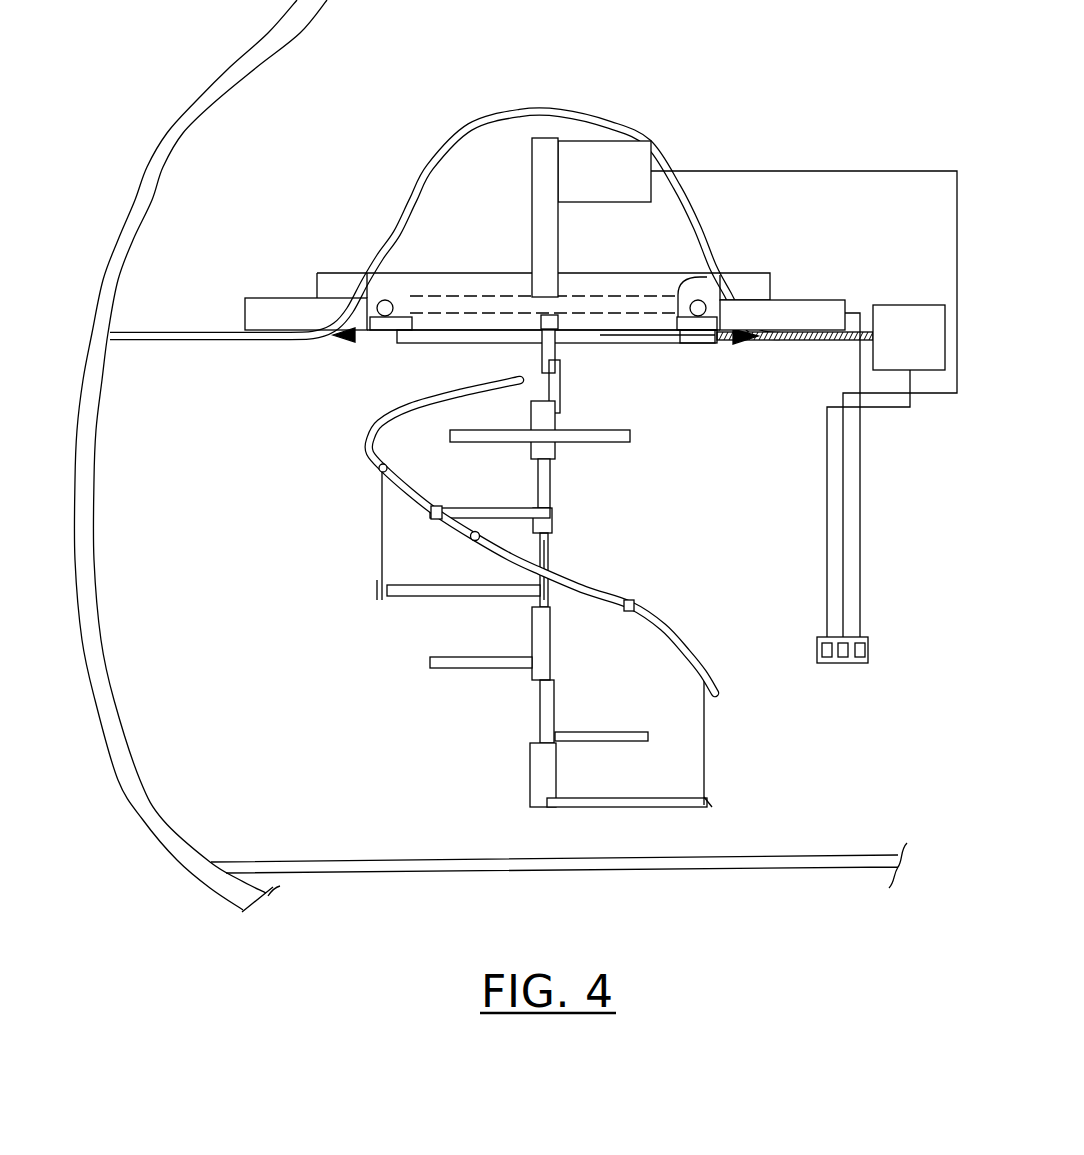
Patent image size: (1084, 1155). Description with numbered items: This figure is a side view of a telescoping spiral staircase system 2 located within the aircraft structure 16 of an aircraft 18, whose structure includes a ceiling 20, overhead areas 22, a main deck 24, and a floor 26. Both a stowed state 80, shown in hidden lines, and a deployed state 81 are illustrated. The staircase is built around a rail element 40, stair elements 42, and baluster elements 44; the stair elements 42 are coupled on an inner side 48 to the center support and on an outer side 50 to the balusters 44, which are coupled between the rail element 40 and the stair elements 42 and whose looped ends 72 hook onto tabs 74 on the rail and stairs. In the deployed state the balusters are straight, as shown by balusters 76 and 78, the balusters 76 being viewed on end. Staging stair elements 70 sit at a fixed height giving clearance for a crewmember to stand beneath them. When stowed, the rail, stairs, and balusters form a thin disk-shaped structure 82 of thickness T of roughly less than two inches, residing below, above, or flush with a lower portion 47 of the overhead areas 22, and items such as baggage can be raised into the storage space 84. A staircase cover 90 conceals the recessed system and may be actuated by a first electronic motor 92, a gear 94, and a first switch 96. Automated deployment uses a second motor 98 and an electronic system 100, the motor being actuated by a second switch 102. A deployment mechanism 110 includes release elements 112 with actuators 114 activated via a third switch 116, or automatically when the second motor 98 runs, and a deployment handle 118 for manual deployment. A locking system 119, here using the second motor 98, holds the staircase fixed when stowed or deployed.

The spiral staircase system 2 is at (766, 103).
The aircraft structure 16 is at (92, 620).
The aircraft 18 is at (73, 517).
The ceiling 20 is at (386, 255).
The overhead areas 22 is at (232, 318).
The main deck 24 is at (172, 752).
The floor 26 is at (400, 875).
The rail element 40 is at (374, 315).
The stair elements 42 is at (625, 343).
The baluster elements 44 is at (443, 506).
The lower portion 47 is at (356, 340).
The inner side 48 is at (543, 570).
The outer side 50 is at (377, 600).
The staging stair elements 70 is at (643, 343).
The looped ends 72 is at (718, 700).
The tabs 74 is at (375, 590).
The balusters 76 is at (382, 525).
The balusters 78 is at (465, 657).
The stowed state 80 is at (584, 265).
The deployed state 81 is at (660, 494).
The disk-shaped structure 82 is at (735, 277).
The storage space 84 is at (462, 324).
The staircase cover 90 is at (700, 343).
The first electronic motor 92 is at (927, 305).
The gear 94 is at (862, 300).
The first switch 96 is at (827, 663).
The second motor 98 is at (655, 147).
The electronic system 100 is at (940, 425).
The second switch 102 is at (843, 663).
The deployment mechanism 110 is at (398, 313).
The release elements 112 is at (357, 273).
The actuators 114 is at (272, 298).
The third switch 116 is at (870, 650).
The deployment handle 118 is at (553, 330).
The locking system 119 is at (584, 116).
The thickness T is at (655, 365).